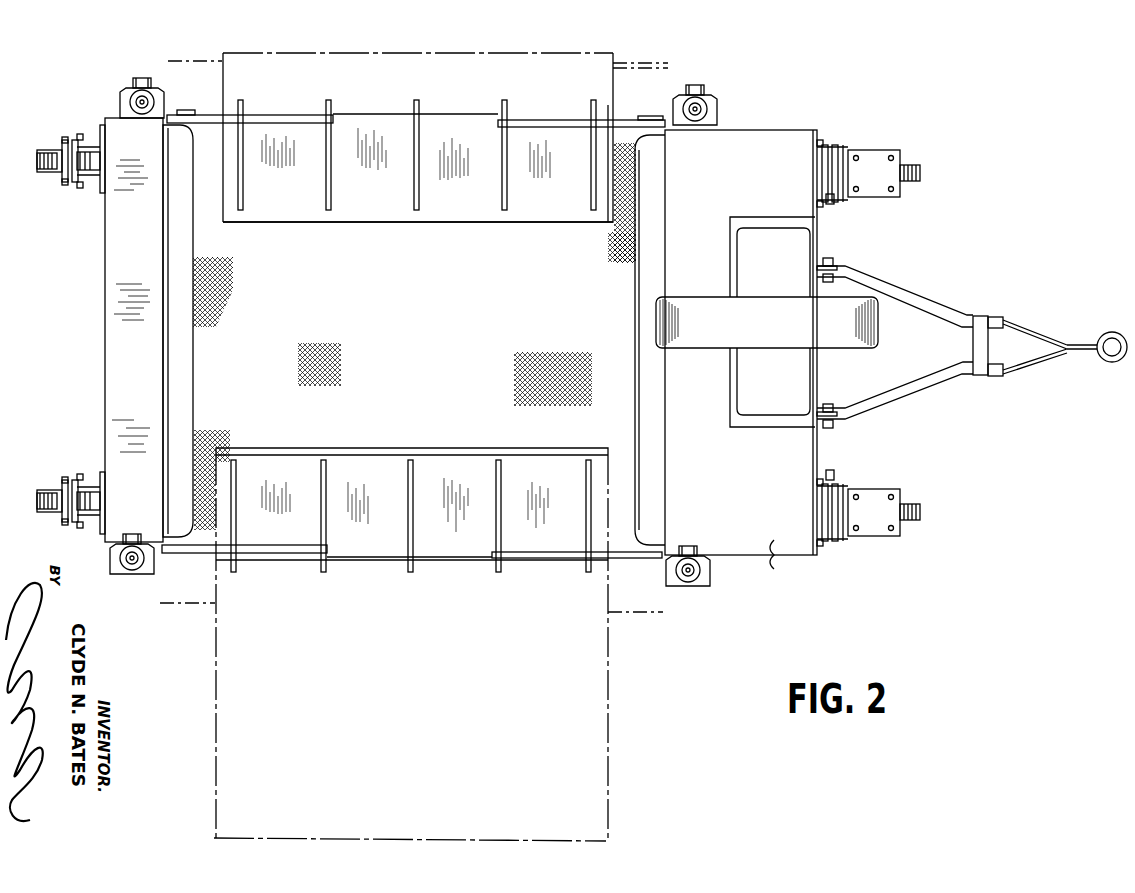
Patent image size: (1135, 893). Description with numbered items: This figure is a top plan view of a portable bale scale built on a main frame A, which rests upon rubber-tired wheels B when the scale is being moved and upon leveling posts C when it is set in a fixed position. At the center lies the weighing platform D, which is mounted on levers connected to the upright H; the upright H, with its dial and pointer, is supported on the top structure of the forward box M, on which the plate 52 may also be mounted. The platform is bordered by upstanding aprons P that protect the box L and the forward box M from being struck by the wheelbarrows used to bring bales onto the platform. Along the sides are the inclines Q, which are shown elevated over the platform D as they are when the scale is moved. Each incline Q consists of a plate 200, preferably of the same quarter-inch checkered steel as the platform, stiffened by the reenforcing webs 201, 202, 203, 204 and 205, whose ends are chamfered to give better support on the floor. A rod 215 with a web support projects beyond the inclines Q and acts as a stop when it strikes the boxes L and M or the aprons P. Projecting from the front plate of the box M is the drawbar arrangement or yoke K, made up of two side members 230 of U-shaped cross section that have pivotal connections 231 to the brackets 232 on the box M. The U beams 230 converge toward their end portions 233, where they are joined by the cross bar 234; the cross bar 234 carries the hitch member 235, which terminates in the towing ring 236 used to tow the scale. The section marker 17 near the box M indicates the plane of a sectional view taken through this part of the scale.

The section line 17 is at (793, 538).
The plate 52 is at (784, 561).
The plates 200 is at (537, 212).
The reenforcing web 201 is at (243, 185).
The reenforcing web 202 is at (331, 158).
The reenforcing web 203 is at (419, 142).
The reenforcing web 204 is at (507, 173).
The reenforcing web 205 is at (590, 190).
The rod 215 is at (277, 118).
The side members 230 is at (879, 283).
The pivotal connections 231 is at (835, 260).
The brackets 232 is at (822, 258).
The end portions 233 is at (1000, 316).
The cross bar 234 is at (972, 348).
The hitch member 235 is at (1043, 356).
The towing ring 236 is at (1110, 362).
The box L is at (103, 362).
The forward box M is at (767, 145).
The upstanding aprons P is at (182, 338).
The inclines Q is at (391, 203).
The platform D is at (481, 343).
The upright H is at (710, 343).
The drawbar arrangement K is at (933, 303).
The main frame A is at (203, 530).
The rubber-tired wheels B is at (52, 170).
The leveling posts C is at (165, 90).